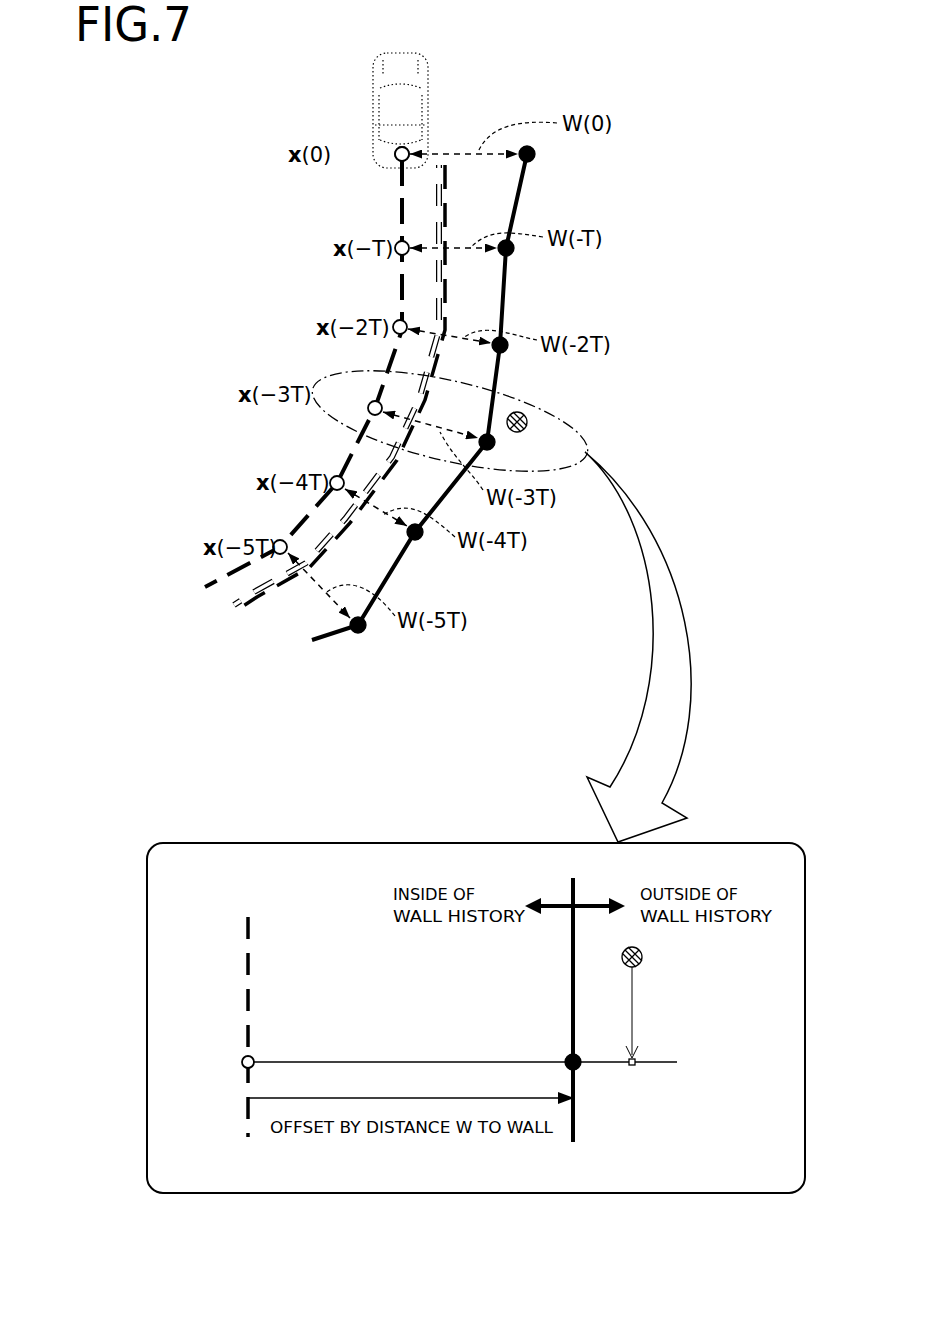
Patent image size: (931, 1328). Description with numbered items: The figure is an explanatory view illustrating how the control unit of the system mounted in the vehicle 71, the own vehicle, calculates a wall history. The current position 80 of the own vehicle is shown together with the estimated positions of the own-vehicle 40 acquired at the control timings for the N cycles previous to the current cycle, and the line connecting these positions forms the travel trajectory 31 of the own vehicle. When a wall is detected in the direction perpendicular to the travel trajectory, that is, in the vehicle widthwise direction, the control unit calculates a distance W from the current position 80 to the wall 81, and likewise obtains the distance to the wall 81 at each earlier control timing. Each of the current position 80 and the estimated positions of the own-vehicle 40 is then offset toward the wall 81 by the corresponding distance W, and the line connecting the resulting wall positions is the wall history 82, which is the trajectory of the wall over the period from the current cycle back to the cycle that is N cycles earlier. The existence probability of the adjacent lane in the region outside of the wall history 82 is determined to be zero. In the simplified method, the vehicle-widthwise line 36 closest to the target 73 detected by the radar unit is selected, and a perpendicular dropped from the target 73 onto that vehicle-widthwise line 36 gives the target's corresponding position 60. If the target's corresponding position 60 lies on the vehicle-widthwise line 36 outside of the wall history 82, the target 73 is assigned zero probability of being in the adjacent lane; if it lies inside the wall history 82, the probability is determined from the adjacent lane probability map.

The travel trajectory 31 is at (400, 290).
The vehicle-widthwise line 36 is at (380, 1061).
The estimated positions of the own-vehicle 40 is at (368, 405).
The target's corresponding position 60 is at (634, 1068).
The vehicle 71 is at (373, 80).
The target 73 is at (527, 430).
The current position of the own vehicle 80 is at (398, 162).
The wall 81 is at (535, 154).
The wall history 82 is at (505, 303).